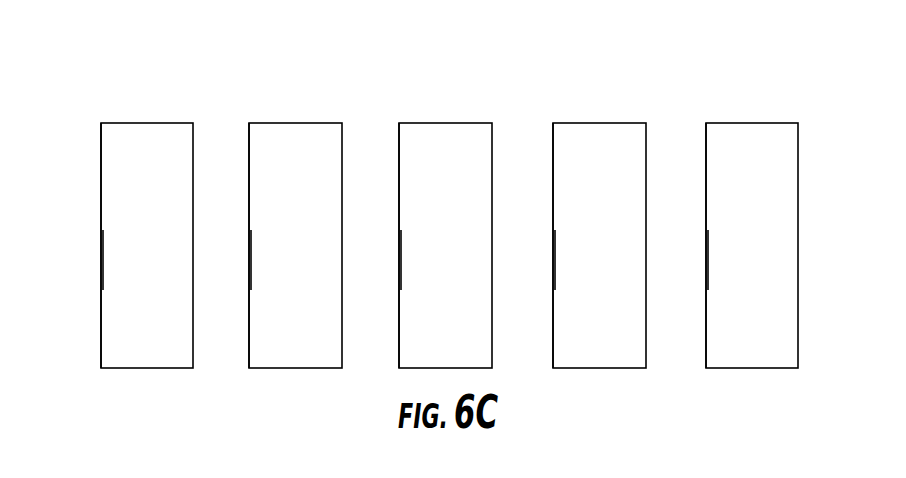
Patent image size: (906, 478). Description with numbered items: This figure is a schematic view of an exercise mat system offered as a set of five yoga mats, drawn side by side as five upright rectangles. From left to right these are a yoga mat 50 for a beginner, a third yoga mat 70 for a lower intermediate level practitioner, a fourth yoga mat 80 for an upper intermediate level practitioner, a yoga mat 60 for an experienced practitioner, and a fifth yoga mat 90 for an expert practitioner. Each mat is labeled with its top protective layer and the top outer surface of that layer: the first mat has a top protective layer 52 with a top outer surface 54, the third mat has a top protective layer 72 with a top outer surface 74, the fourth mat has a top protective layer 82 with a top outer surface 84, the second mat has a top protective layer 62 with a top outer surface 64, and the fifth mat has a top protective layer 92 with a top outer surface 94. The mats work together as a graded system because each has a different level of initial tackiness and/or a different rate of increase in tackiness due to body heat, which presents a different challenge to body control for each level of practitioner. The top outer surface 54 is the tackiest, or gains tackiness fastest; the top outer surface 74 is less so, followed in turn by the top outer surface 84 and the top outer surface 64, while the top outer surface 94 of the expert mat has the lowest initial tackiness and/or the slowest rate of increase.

The yoga mat 50 is at (137, 104).
The third yoga mat 70 is at (285, 104).
The fourth yoga mat 80 is at (435, 104).
The yoga mat 60 is at (589, 104).
The fifth yoga mat 90 is at (742, 104).
The top protective layer 52 is at (120, 170).
The top outer surface 54 is at (109, 255).
The top protective layer 72 is at (268, 170).
The top outer surface 74 is at (257, 255).
The top protective layer 82 is at (418, 170).
The top outer surface 84 is at (407, 255).
The top protective layer 62 is at (572, 170).
The top outer surface 64 is at (561, 255).
The top protective layer 92 is at (725, 170).
The top outer surface 94 is at (714, 255).